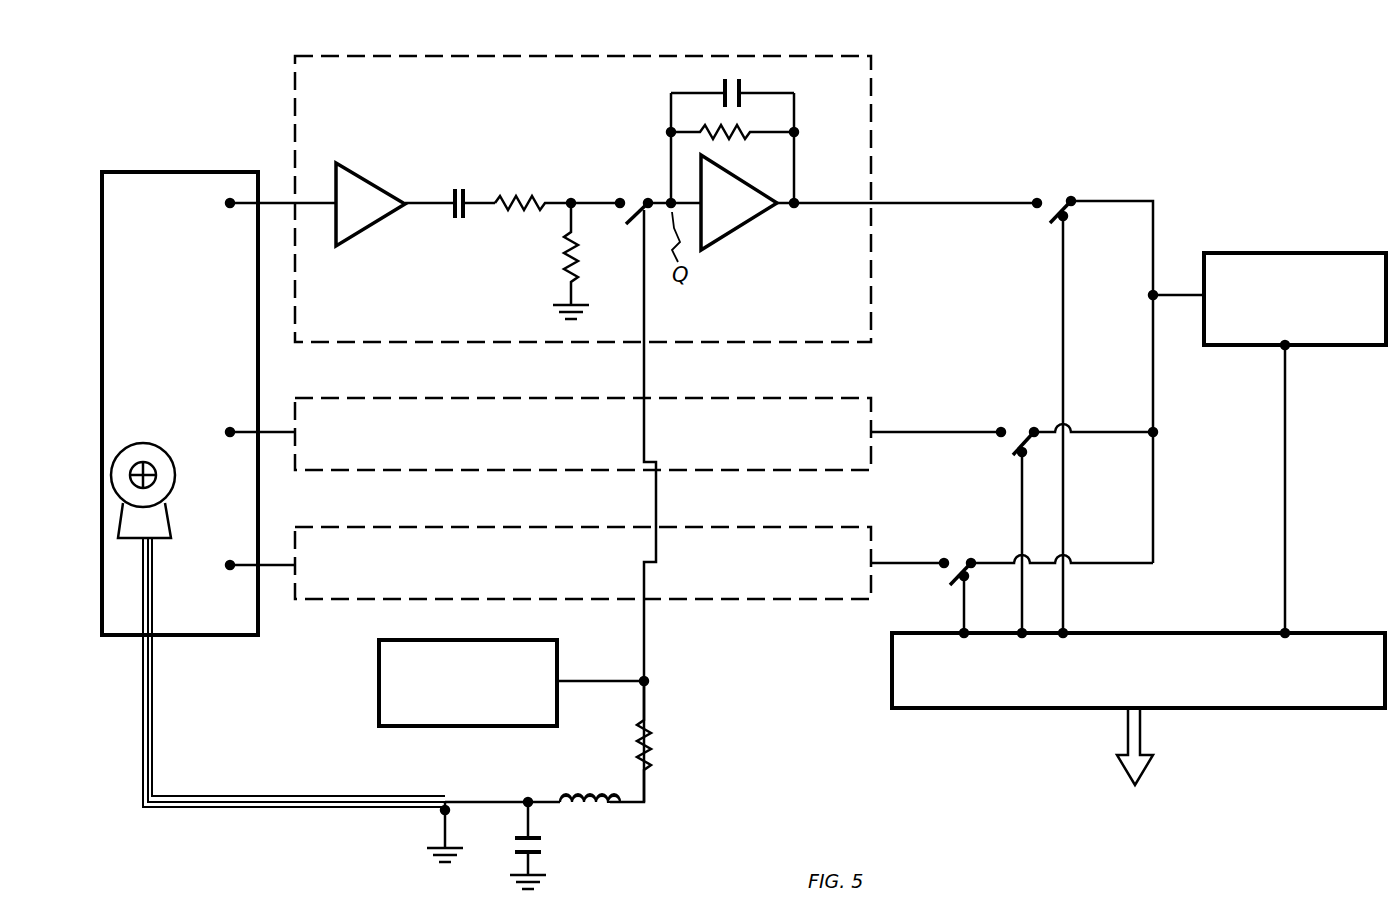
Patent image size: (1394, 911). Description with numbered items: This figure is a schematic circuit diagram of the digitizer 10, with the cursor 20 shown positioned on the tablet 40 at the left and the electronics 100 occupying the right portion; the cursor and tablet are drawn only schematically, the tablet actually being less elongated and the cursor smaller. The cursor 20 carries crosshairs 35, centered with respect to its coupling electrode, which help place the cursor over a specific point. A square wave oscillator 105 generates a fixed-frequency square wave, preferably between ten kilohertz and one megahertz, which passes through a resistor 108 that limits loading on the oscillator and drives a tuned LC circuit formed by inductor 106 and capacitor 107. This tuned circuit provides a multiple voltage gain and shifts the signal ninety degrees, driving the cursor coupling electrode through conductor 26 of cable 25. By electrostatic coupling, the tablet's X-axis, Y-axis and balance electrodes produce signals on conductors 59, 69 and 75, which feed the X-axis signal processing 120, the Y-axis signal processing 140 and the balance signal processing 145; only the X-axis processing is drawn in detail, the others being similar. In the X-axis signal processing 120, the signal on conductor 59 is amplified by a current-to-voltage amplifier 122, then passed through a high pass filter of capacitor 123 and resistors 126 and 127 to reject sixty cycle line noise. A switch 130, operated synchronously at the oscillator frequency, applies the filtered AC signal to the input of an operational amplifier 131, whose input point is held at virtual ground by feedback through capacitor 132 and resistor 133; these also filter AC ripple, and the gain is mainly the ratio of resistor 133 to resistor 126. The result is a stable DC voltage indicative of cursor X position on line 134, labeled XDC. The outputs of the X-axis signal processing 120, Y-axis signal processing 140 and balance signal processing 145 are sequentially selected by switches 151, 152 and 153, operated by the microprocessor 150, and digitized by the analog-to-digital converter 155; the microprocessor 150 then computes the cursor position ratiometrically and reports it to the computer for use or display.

The digitizer 10 is at (192, 138).
The cursor 20 is at (150, 443).
The cable 25 is at (326, 812).
The conductor 26 is at (482, 801).
The crosshairs 35 is at (158, 472).
The tablet 40 is at (236, 171).
The conductor 59 is at (272, 202).
The conductor 69 is at (278, 431).
The conductor 75 is at (276, 564).
The electronics 100 is at (990, 145).
The square wave oscillator 105 is at (378, 682).
The inductor 106 is at (612, 815).
The capacitor 107 is at (545, 849).
The resistor 108 is at (652, 744).
The X-axis signal processing 120 is at (872, 110).
The current-to-voltage amplifier 122 is at (367, 222).
The capacitor 123 is at (466, 220).
The resistor 126 is at (528, 200).
The resistor 127 is at (556, 268).
The switch 130 is at (622, 222).
The operational amplifier 131 is at (742, 222).
The capacitor 132 is at (740, 88).
The resistor 133 is at (742, 136).
The line 134 is at (935, 206).
The Y-axis signal processing 140 is at (760, 397).
The balance signal processing 145 is at (760, 526).
The microprocessor 150 is at (910, 710).
The switch 151 is at (1080, 195).
The switch 152 is at (1012, 455).
The switch 153 is at (960, 567).
The analog-to-digital converter 155 is at (1355, 347).